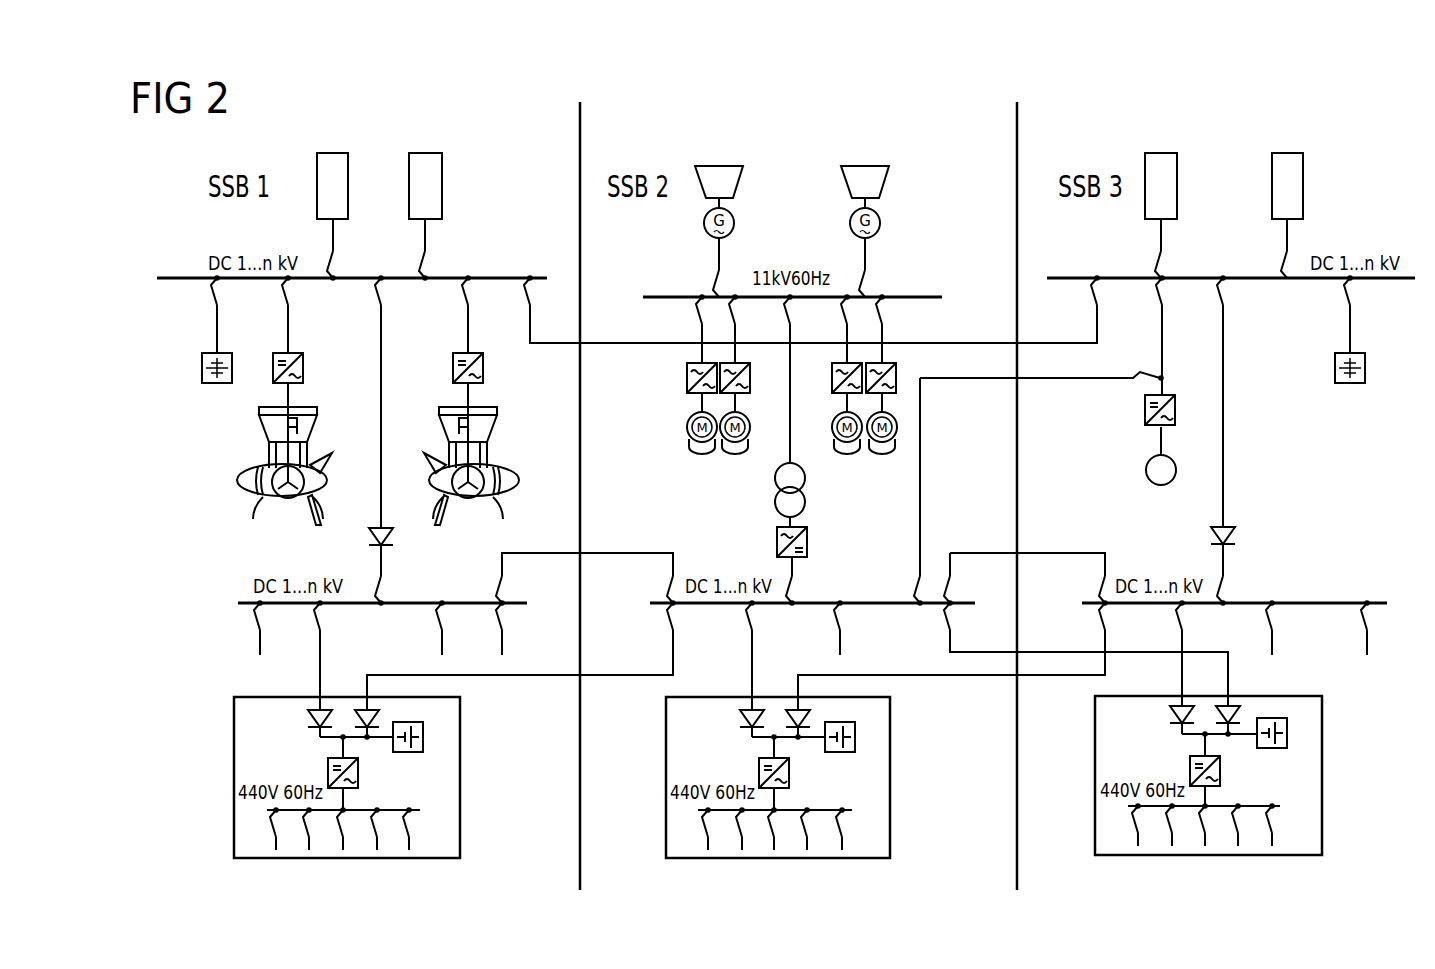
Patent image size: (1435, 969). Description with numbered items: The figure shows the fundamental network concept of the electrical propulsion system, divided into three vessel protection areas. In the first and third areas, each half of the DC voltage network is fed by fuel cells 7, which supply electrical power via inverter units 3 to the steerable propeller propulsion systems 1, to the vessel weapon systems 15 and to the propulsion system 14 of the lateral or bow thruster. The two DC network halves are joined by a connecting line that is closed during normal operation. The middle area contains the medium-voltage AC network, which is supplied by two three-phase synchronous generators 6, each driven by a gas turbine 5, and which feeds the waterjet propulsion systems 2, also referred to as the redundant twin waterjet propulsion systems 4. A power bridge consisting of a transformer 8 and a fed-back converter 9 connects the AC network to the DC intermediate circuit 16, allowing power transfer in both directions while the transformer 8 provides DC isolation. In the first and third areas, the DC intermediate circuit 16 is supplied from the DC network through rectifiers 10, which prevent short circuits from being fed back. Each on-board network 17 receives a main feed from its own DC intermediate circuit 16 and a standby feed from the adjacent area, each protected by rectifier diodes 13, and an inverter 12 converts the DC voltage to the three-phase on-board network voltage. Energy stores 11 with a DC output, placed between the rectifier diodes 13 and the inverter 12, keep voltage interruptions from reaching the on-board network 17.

The steerable propeller propulsion system 1 is at (253, 492).
The waterjet propulsion system 2 is at (727, 457).
The inverter unit 3 is at (303, 369).
The waterjet propulsion system 4 is at (687, 379).
The turbine (prime mover) 5 is at (719, 166).
The three-phase synchronous generator 6 is at (850, 222).
The fuel cell 7 is at (335, 153).
The transformer 8 is at (776, 478).
The converter 9 is at (777, 550).
The rectifier 10 is at (369, 537).
The energy store 11 is at (423, 745).
The inverter 12 is at (328, 776).
The rectifier diode 13 is at (341, 724).
The lateral thruster propulsion system 14 is at (1146, 468).
The weapon system 15 is at (203, 358).
The DC intermediate circuit 16 is at (242, 610).
The on-board network 17 is at (234, 775).